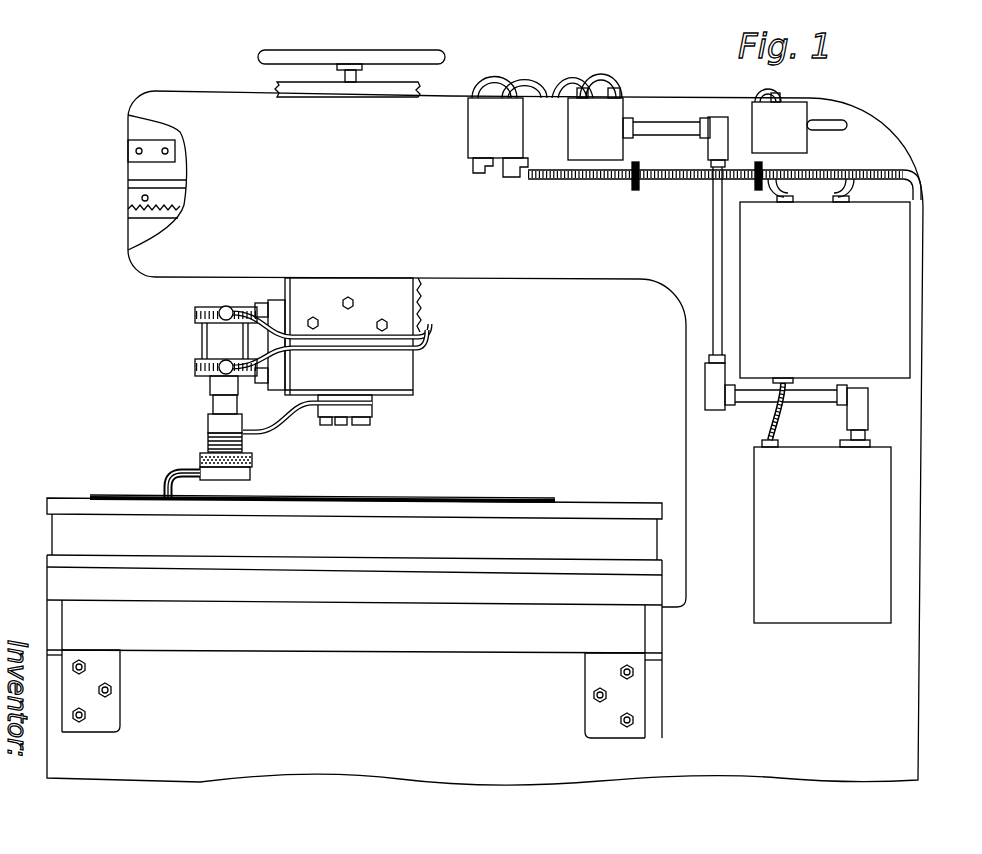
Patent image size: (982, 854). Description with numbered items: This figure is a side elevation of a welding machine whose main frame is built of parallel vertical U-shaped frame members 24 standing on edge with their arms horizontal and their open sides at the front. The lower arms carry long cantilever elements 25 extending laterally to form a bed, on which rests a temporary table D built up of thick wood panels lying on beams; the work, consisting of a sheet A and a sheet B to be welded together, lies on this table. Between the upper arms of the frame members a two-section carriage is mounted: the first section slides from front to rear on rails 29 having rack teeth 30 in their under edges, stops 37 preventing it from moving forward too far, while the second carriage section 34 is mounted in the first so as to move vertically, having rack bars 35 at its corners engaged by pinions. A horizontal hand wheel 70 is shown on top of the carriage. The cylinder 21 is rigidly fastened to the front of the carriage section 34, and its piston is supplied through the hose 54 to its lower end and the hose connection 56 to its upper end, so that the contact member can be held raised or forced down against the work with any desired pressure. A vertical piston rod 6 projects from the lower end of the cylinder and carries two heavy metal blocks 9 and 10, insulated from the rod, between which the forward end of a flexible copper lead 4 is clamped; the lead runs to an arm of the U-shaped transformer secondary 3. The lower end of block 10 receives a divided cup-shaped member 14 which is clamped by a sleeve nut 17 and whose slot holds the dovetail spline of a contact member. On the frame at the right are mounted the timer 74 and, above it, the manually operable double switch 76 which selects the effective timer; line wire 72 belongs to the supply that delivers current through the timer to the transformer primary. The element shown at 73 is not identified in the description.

The transformer secondary 3 is at (367, 398).
The flexible copper leads 4 is at (290, 422).
The piston rod 6 is at (210, 401).
The metal block 9 is at (207, 423).
The metal block 10 is at (207, 445).
The divided cup-shaped member 14 is at (250, 475).
The sleeve nut 17 is at (253, 460).
The cylinder 21 is at (210, 336).
The U-shaped frame members 24 is at (545, 268).
The cantilever elements 25 is at (62, 624).
The rails 29 is at (168, 198).
The rack teeth 30 is at (150, 212).
The second carriage section 34 is at (388, 370).
The rack bars 35 is at (280, 281).
The stops 37 is at (128, 146).
The hose 54 is at (356, 356).
The hose connection 56 is at (357, 338).
The hand wheel 70 is at (262, 52).
The line wire 72 is at (724, 182).
The pipe 73 is at (787, 303).
The timer 74 is at (878, 365).
The double switch 76 is at (657, 125).
The sheet A is at (440, 505).
The sheet B is at (388, 496).
The temporary table D is at (311, 576).